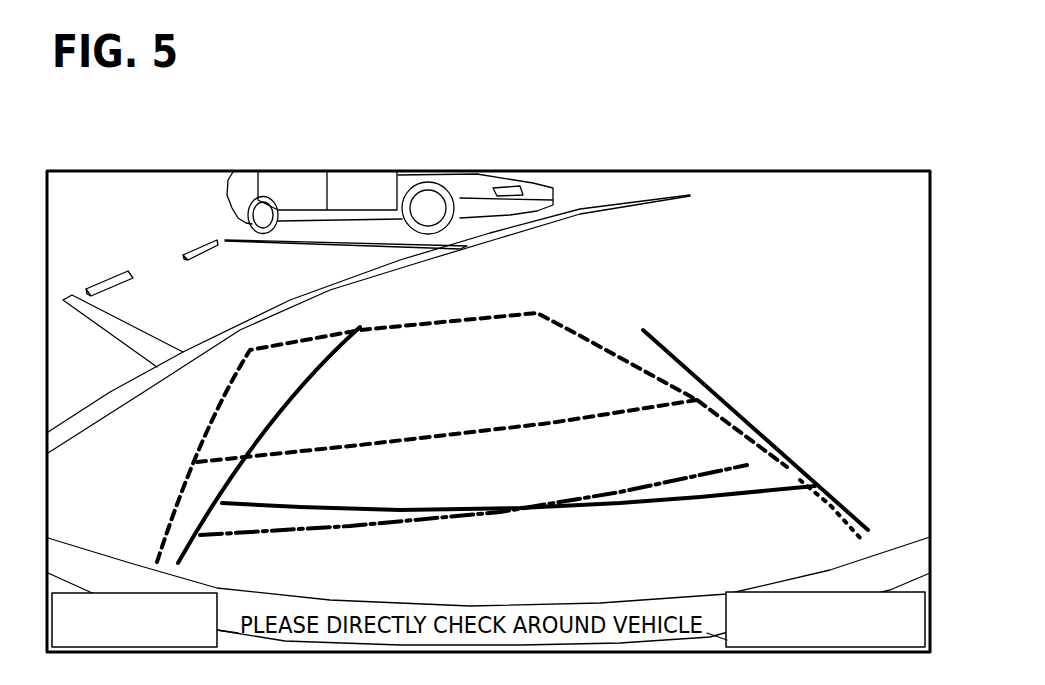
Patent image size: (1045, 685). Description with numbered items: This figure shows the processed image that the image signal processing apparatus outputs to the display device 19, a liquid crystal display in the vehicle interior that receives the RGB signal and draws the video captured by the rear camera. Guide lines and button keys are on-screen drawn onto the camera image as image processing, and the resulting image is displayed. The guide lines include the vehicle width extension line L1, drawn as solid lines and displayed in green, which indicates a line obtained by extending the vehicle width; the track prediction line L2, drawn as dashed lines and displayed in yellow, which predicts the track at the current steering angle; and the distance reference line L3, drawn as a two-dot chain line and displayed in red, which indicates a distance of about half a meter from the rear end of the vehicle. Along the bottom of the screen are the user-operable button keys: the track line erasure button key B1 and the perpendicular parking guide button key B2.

The display device 19 is at (800, 171).
The vehicle width extension line L1 is at (692, 370).
The track prediction line L2 is at (548, 320).
The distance reference line L3 is at (660, 482).
The track line erasure button key B1 is at (118, 593).
The perpendicular parking guide button key B2 is at (790, 592).